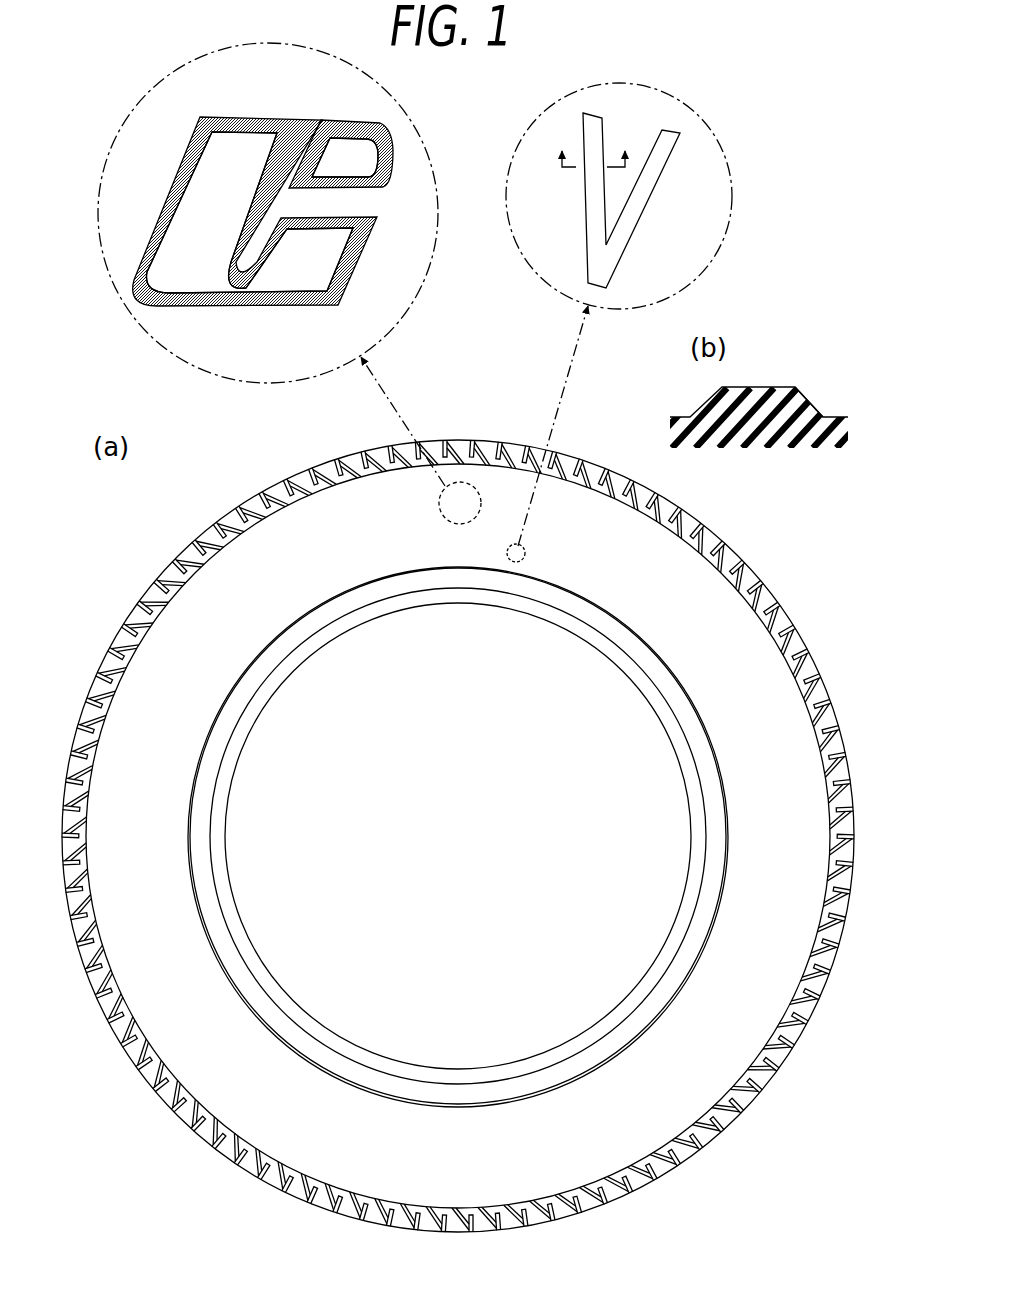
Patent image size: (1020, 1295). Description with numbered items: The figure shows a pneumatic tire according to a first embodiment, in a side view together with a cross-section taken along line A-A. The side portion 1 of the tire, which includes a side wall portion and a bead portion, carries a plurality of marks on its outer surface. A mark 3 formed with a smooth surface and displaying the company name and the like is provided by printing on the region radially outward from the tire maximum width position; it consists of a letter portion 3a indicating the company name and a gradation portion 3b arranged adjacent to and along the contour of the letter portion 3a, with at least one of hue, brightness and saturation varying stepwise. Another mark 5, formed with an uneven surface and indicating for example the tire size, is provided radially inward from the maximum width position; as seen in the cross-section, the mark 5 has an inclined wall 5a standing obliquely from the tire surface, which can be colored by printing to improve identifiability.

The side portion 1 is at (695, 643).
The mark 3 is at (402, 647).
The letter portion 3a is at (315, 258).
The gradation portion 3b is at (390, 147).
The mark 5 is at (639, 484).
The inclined wall 5a is at (805, 395).